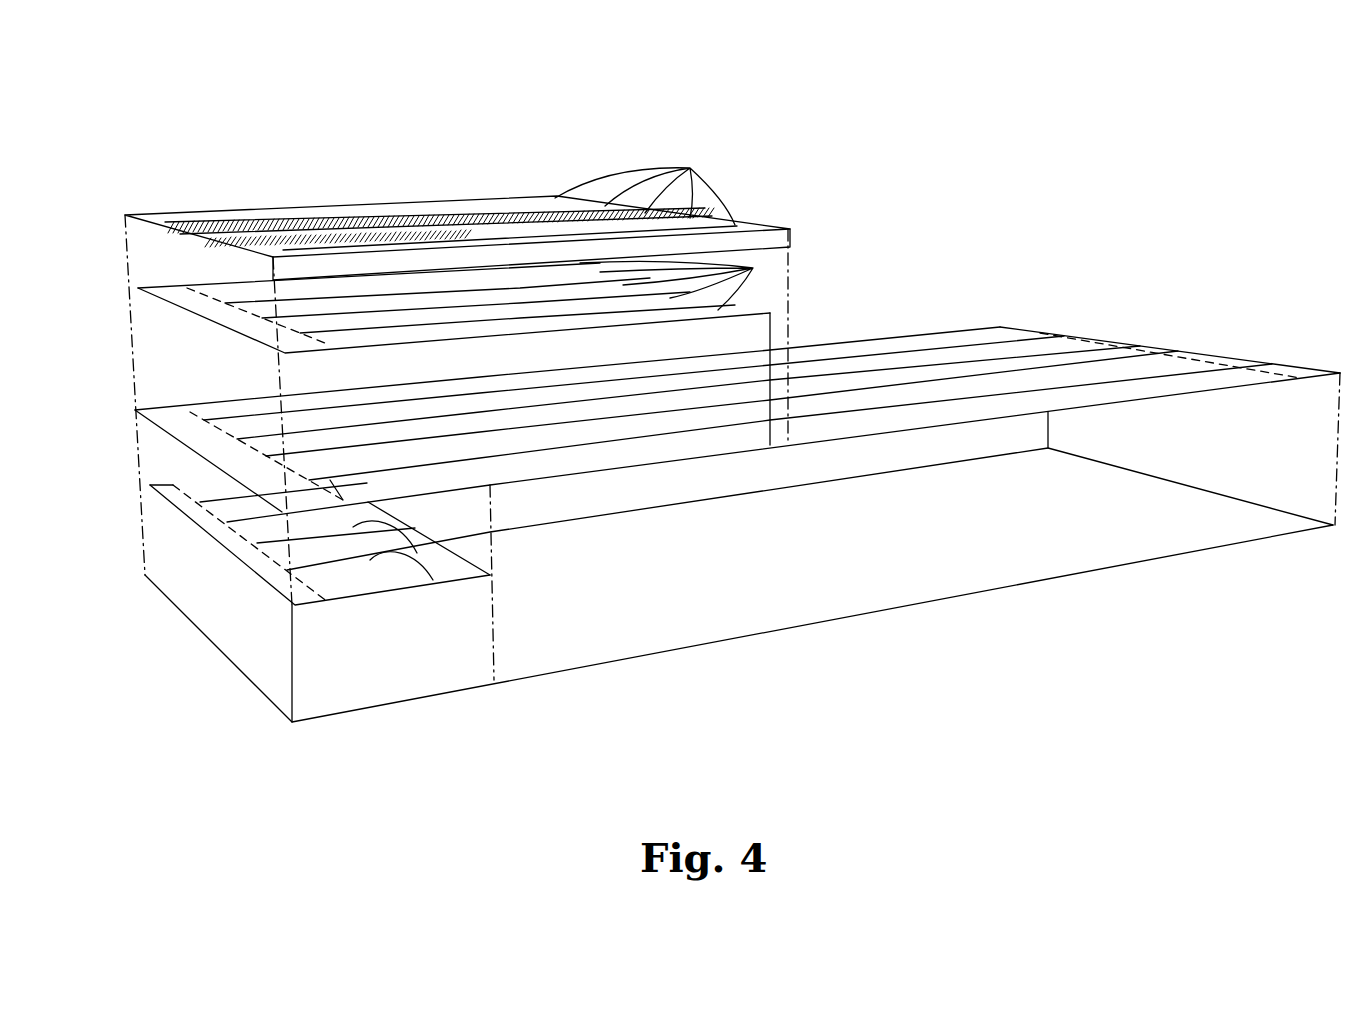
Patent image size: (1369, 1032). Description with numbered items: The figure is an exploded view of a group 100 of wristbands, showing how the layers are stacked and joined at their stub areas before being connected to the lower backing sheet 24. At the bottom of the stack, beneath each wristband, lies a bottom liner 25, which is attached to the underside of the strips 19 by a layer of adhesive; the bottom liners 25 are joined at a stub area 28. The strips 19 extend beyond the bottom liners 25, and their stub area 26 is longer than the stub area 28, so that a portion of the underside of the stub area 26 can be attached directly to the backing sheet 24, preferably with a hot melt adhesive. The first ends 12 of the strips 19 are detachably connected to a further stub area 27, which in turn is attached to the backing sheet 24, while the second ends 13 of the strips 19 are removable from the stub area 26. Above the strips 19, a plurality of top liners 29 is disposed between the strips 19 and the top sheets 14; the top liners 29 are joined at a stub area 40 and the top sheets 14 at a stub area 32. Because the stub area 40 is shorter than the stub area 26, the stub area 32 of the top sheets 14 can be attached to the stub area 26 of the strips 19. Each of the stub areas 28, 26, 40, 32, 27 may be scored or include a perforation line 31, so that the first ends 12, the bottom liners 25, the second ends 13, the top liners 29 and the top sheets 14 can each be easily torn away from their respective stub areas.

The group 100 is at (1080, 162).
The first ends 12 is at (1185, 360).
The second end 13 is at (334, 466).
The top sheets 14 is at (690, 168).
The strips 19 is at (907, 342).
The backing sheet 24 is at (738, 646).
The bottom liner 25 is at (205, 500).
The stub area 26 is at (176, 420).
The stub area 27 is at (1257, 373).
The stub area 28 is at (212, 525).
The top liners 29 is at (753, 268).
The perforation line 31 is at (246, 222).
The stub area 32 is at (171, 217).
The stub area 40 is at (203, 311).